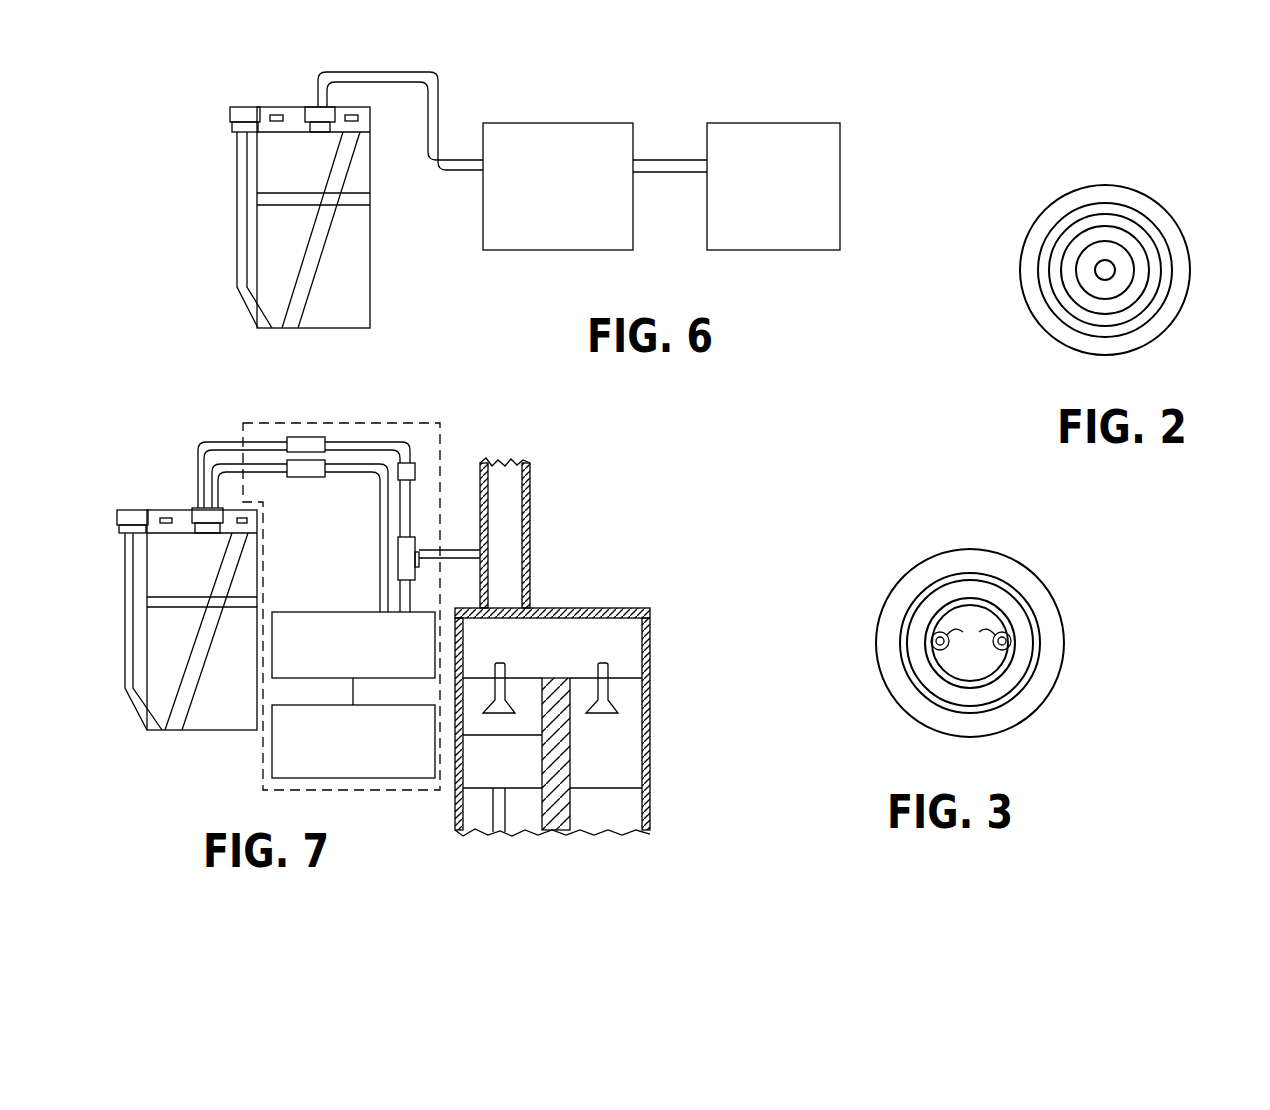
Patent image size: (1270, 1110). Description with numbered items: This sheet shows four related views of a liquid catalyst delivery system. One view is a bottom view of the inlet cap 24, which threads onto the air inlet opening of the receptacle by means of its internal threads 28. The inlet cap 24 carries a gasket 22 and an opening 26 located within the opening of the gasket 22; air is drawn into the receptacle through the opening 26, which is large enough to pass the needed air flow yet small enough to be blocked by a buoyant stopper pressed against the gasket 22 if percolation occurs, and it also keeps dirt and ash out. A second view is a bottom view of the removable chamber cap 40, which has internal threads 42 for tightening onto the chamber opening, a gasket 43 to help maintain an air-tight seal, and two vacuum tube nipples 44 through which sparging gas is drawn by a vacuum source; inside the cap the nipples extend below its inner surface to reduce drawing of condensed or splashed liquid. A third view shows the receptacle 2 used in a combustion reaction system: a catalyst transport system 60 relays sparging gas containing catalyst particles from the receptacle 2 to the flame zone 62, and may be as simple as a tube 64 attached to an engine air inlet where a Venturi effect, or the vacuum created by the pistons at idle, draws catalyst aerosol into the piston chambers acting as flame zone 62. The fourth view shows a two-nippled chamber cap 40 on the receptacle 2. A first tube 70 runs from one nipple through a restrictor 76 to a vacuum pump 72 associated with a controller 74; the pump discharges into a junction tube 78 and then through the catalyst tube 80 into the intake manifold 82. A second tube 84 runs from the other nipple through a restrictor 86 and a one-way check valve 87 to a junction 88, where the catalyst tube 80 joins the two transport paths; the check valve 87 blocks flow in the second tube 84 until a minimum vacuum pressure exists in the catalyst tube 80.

In FIG. 6, the receptacle 2 is at (278, 96).
In FIG. 7, the receptacle 2 is at (148, 485).
In FIG. 6, the tube 64 is at (438, 72).
In FIG. 6, the catalyst transport system 60 is at (558, 186).
In FIG. 7, the catalyst transport system 60 is at (405, 423).
In FIG. 6, the flame zone 62 is at (736, 186).
In FIG. 2, the inlet cap 24 is at (1185, 211).
In FIG. 2, the opening 26 is at (1100, 260).
In FIG. 2, the gasket 22 is at (1140, 272).
In FIG. 2, the internal threads 28 is at (1152, 323).
In FIG. 3, the chamber cap 40 is at (1056, 592).
In FIG. 7, the chamber cap 40 is at (195, 512).
In FIG. 3, the internal threads 42 is at (1035, 650).
In FIG. 3, the gasket 43 is at (1003, 683).
In FIG. 3, the vacuum tube nipples 44 is at (971, 647).
In FIG. 7, the restrictor 86 is at (305, 437).
In FIG. 7, the second tube 84 is at (355, 440).
In FIG. 7, the restrictor 76 is at (292, 478).
In FIG. 7, the first tube 70 is at (358, 475).
In FIG. 7, the one-way check valve 87 is at (415, 472).
In FIG. 7, the junction 88 is at (418, 540).
In FIG. 7, the intake manifold 82 is at (505, 533).
In FIG. 7, the junction tube 78 is at (400, 600).
In FIG. 7, the catalyst tube 80 is at (457, 560).
In FIG. 7, the vacuum pump 72 is at (330, 612).
In FIG. 7, the controller 74 is at (331, 705).